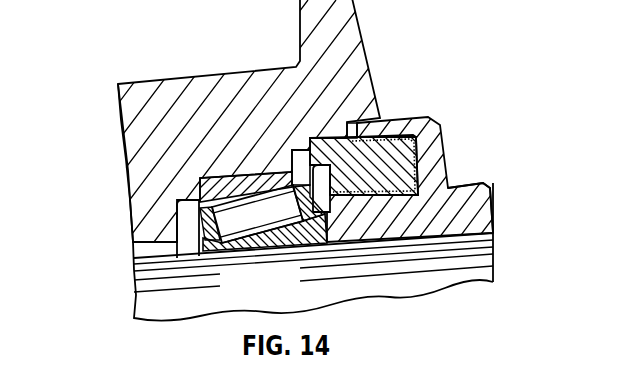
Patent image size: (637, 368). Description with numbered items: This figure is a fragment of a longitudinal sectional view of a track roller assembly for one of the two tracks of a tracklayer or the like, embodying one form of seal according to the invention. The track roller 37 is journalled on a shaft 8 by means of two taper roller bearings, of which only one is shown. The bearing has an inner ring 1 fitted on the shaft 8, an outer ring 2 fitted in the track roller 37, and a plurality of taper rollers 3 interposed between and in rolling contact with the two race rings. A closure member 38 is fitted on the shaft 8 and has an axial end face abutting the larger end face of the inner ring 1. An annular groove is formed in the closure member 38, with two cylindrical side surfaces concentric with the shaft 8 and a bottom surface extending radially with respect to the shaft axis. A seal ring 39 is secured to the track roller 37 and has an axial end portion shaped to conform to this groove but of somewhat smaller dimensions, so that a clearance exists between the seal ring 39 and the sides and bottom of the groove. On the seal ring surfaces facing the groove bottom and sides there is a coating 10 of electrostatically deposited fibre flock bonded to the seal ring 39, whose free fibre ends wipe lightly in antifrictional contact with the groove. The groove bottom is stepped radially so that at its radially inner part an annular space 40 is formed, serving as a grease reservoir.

The inner ring 1 is at (280, 240).
The outer ring 2 is at (233, 168).
The taper rollers 3 is at (247, 216).
The shaft 8 is at (485, 276).
The coating 10 is at (431, 160).
The track roller 37 is at (121, 108).
The closure member 38 is at (482, 192).
The seal ring 39 is at (381, 150).
The annular space 40 is at (438, 168).